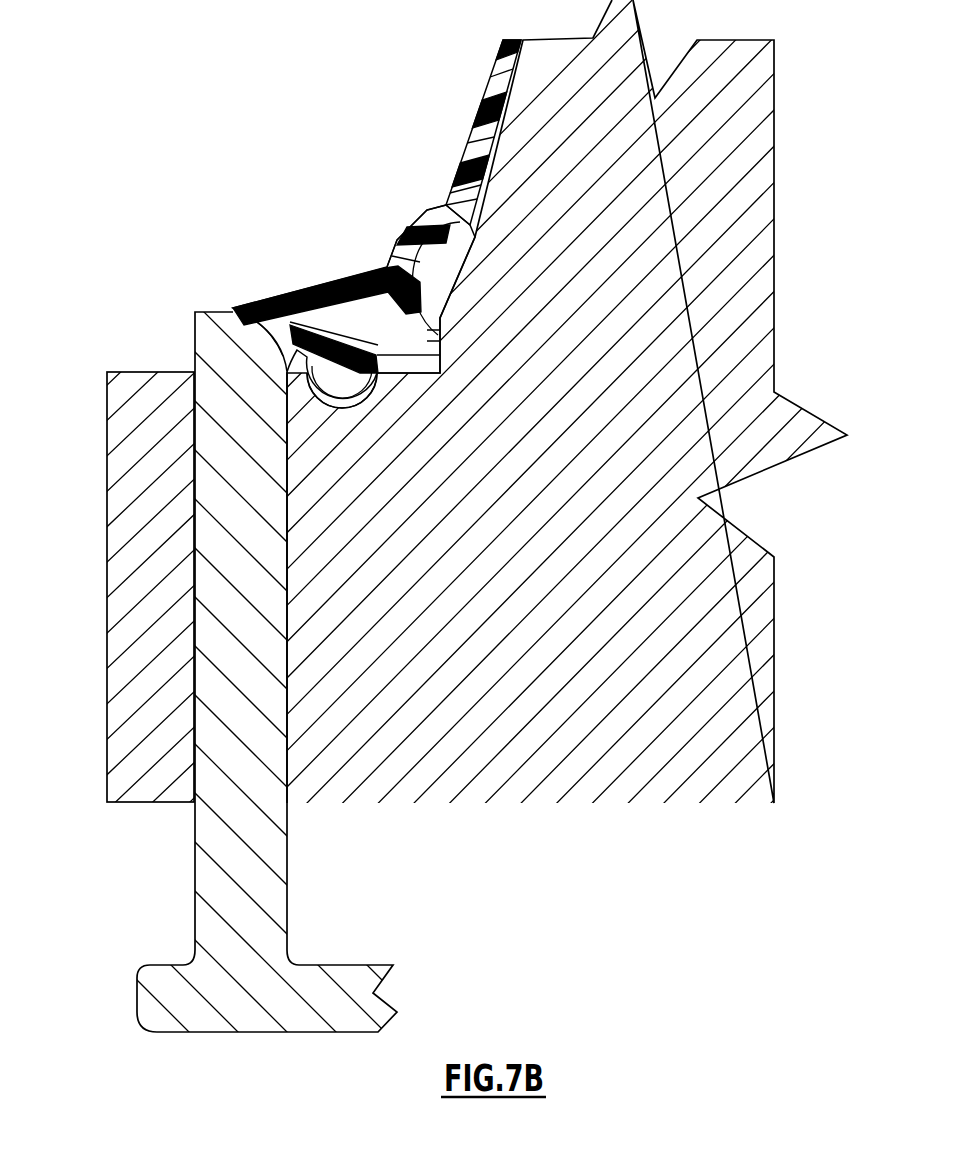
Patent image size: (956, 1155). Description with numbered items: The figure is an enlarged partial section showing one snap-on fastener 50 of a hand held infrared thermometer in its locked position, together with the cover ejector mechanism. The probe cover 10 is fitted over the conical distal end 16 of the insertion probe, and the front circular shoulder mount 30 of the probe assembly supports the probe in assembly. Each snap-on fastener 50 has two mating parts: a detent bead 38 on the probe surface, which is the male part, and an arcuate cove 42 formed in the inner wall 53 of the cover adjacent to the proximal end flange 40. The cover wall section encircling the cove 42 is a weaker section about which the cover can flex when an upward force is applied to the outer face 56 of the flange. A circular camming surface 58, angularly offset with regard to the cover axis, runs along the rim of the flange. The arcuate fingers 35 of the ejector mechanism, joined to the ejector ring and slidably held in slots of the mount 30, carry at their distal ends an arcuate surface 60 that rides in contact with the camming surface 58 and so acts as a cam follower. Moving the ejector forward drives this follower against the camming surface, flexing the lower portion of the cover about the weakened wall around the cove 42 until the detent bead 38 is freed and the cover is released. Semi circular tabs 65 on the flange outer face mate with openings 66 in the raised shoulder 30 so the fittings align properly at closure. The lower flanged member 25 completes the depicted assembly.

The probe cover 10 is at (352, 245).
The distal end of the probe 16 is at (478, 405).
The flange member 25 is at (297, 1045).
The shoulder mount 30 is at (117, 638).
The fingers 35 is at (289, 903).
The detent bead 38 is at (425, 272).
The proximal end flange 40 is at (317, 328).
The cove 42 is at (398, 247).
The snap-on fastener 50 is at (444, 153).
The inner wall of the cover 53 is at (495, 147).
The outer face of the flange 56 is at (400, 360).
The camming surface 58 is at (279, 302).
The arcuate surface 60 is at (268, 356).
The semi circular tabs 65 is at (368, 398).
The openings 66 is at (344, 408).